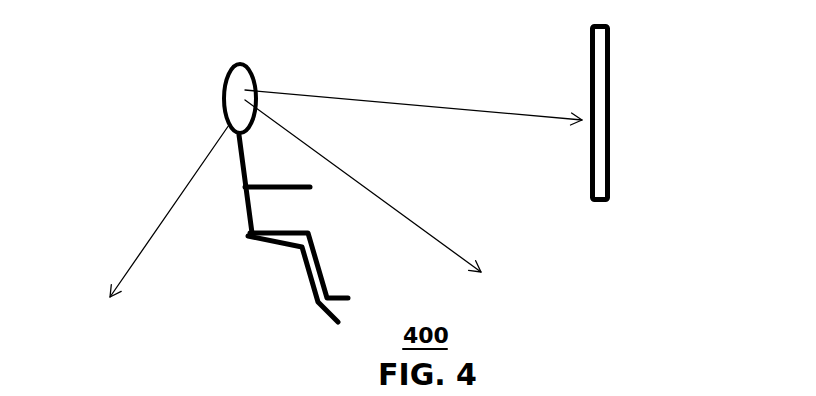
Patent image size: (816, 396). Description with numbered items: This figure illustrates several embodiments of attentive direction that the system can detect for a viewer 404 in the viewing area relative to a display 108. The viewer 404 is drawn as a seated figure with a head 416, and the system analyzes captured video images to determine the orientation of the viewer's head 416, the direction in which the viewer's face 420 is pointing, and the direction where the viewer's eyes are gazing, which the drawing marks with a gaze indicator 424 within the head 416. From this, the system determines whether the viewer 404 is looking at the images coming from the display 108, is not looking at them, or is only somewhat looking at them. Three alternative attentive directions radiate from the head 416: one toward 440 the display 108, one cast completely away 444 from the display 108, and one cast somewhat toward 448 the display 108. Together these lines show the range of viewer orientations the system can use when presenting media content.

The display 108 is at (605, 63).
The viewer 404 is at (247, 217).
The viewer's head 416 is at (228, 62).
The viewer's face 420 is at (236, 108).
The gaze point 424 is at (244, 82).
The attentive direction toward the display 440 is at (419, 107).
The attentive direction completely away from the display 444 is at (160, 222).
The attentive direction somewhat toward the display 448 is at (417, 227).